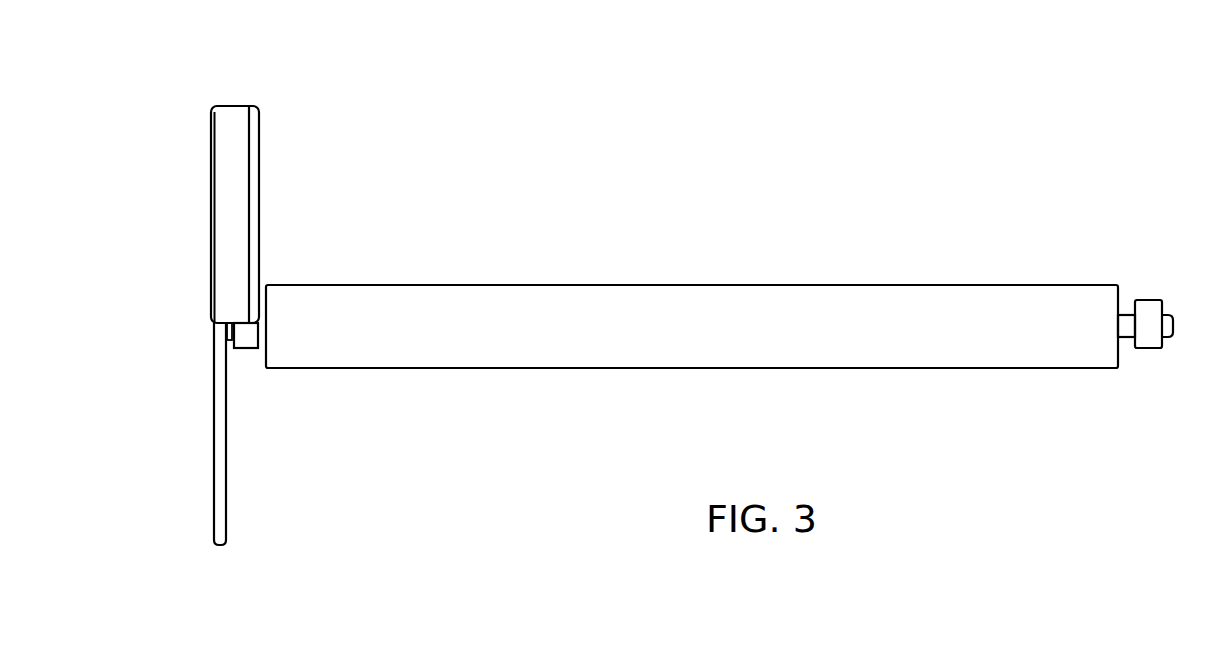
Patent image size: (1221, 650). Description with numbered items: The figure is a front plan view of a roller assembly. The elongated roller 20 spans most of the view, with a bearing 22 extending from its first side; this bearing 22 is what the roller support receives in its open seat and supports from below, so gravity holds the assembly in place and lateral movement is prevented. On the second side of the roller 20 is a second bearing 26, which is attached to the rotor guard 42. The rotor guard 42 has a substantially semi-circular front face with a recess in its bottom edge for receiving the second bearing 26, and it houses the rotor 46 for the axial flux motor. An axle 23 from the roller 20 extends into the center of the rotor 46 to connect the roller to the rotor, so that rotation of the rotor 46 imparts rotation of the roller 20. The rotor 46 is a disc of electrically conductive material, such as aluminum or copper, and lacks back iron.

The roller 20 is at (559, 309).
The bearing 22 is at (1143, 312).
The axle 23 is at (234, 340).
The second bearing 26 is at (249, 345).
The rotor guard 42 is at (236, 128).
The rotor 46 is at (218, 535).